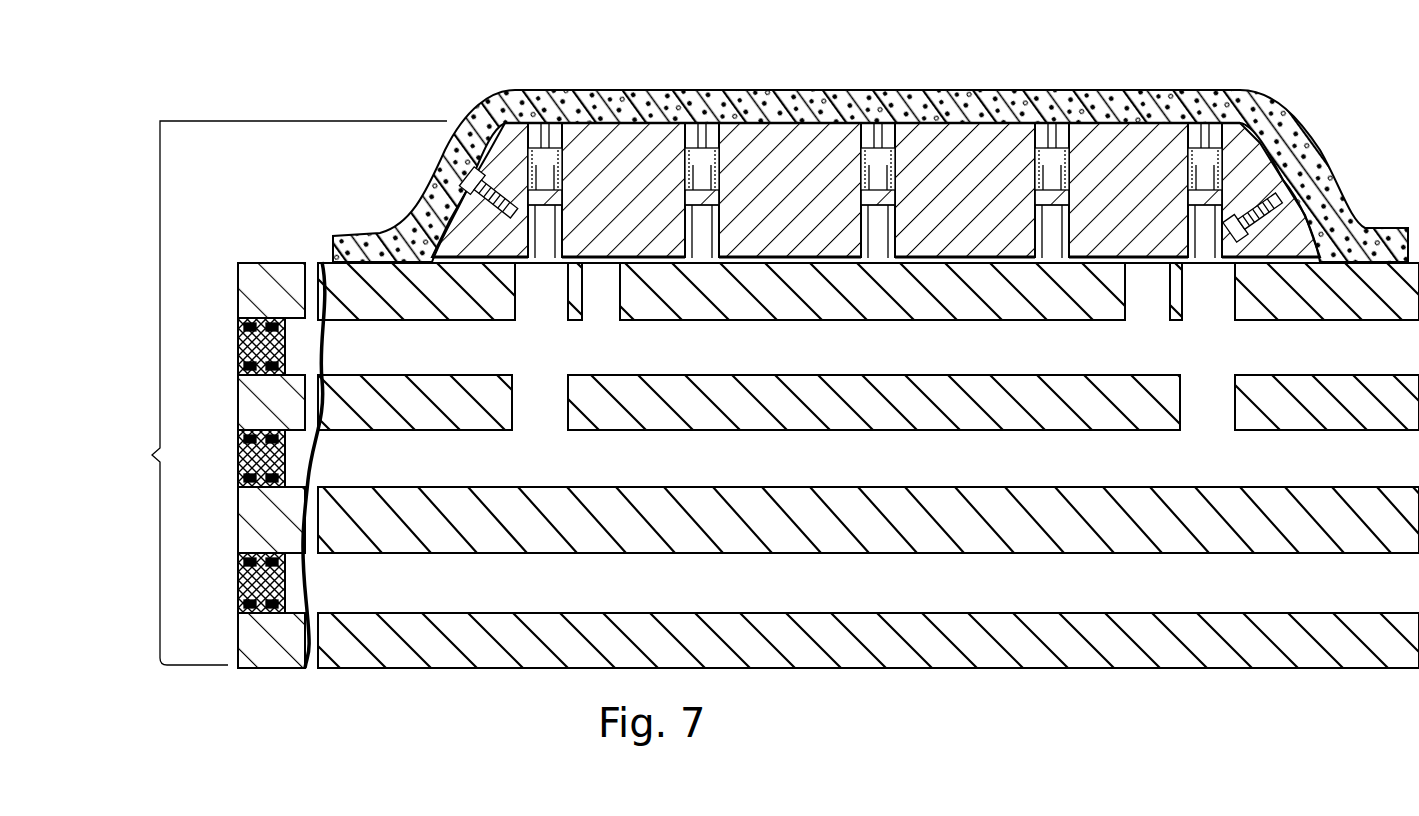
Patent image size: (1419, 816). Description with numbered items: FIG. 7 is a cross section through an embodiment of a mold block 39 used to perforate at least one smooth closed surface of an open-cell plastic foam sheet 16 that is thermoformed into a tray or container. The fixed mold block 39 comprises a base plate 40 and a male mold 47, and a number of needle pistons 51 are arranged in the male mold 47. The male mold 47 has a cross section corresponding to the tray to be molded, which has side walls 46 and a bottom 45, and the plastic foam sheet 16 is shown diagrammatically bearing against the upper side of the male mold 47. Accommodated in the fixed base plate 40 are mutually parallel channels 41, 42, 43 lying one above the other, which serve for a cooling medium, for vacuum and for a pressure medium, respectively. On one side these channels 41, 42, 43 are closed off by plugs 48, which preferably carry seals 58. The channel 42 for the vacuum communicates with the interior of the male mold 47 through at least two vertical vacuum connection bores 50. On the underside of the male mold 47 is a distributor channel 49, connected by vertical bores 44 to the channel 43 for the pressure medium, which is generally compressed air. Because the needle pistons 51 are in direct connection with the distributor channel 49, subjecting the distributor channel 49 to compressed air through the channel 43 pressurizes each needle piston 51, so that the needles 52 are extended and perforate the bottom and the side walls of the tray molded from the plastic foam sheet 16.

The plastic foam sheet 16 is at (870, 150).
The mold block 39 is at (283, 393).
The base plate 40 is at (995, 635).
The channel 41 is at (437, 588).
The channel 42 is at (335, 460).
The channel 43 is at (380, 345).
The vertical bores 44 is at (600, 290).
The bottom 45 is at (1110, 146).
The side walls 46 is at (447, 142).
The male mold 47 is at (960, 158).
The plugs 48 is at (248, 350).
The distributor channel 49 is at (776, 255).
The vertical vacuum connection bores 50 is at (530, 380).
The needle pistons 51 is at (566, 186).
The needles 52 is at (487, 93).
The seals 58 is at (262, 615).